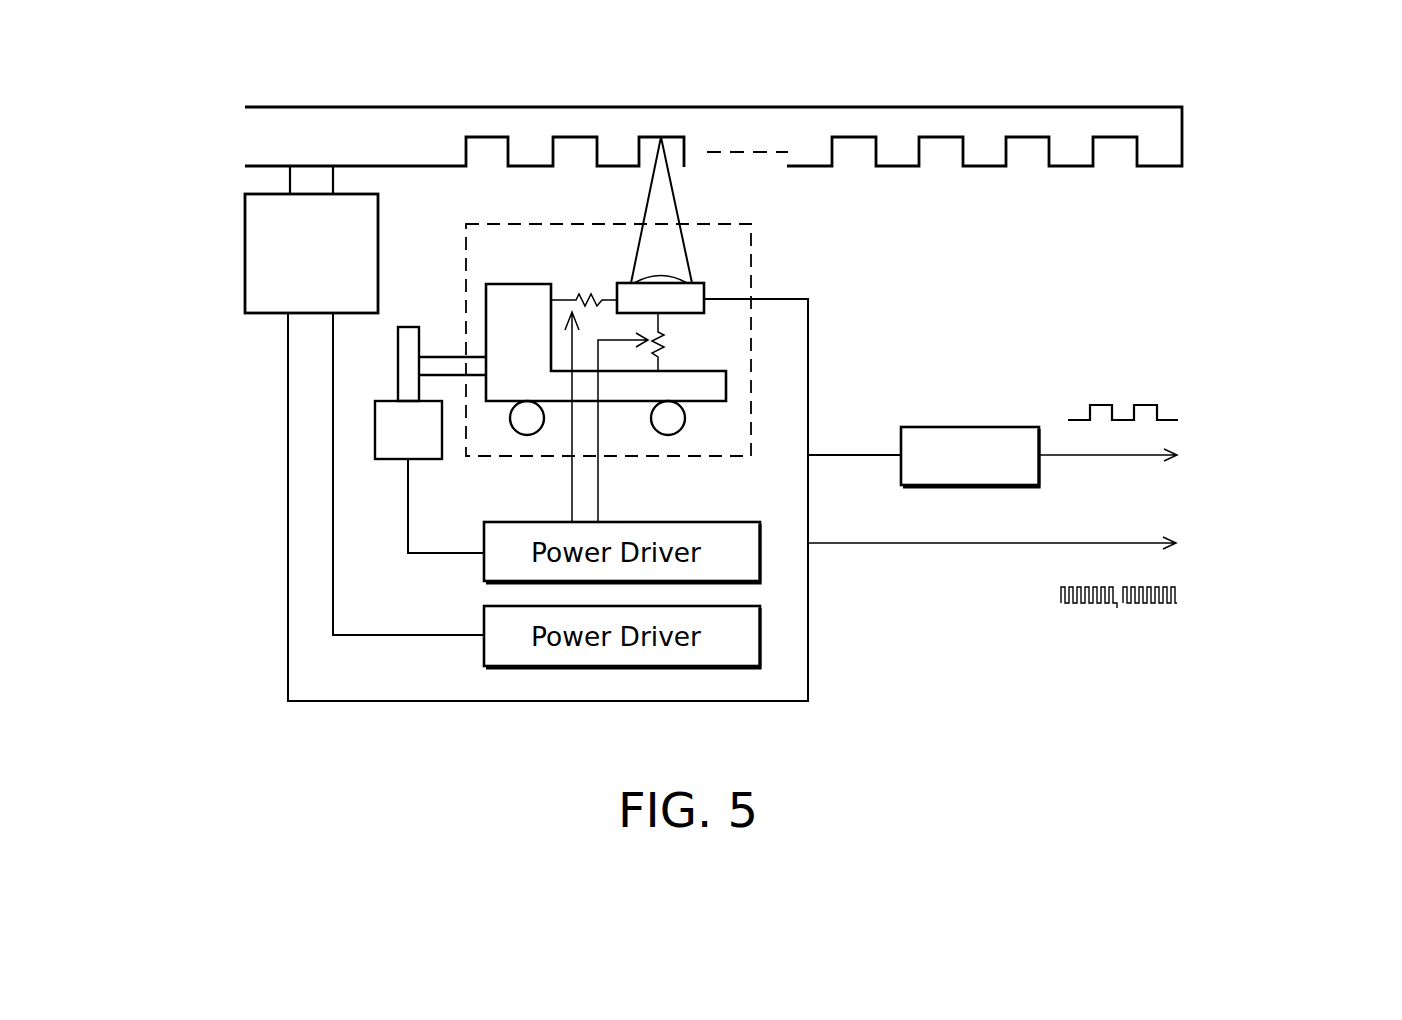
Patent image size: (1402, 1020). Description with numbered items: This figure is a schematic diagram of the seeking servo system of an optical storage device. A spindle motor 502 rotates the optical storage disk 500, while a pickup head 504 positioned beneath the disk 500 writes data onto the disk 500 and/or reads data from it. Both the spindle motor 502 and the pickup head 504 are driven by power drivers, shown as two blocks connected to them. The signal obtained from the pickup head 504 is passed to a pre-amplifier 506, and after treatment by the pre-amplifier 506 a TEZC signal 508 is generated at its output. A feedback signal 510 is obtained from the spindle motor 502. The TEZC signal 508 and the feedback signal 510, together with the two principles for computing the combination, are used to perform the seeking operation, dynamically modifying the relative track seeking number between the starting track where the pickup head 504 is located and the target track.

The optical storage disk 500 is at (248, 142).
The spindle motor 502 is at (245, 256).
The pickup head 504 is at (752, 246).
The pre-amplifier 506 is at (971, 427).
The TEZC signal 508 is at (1277, 436).
The feedback signal 510 is at (1286, 560).